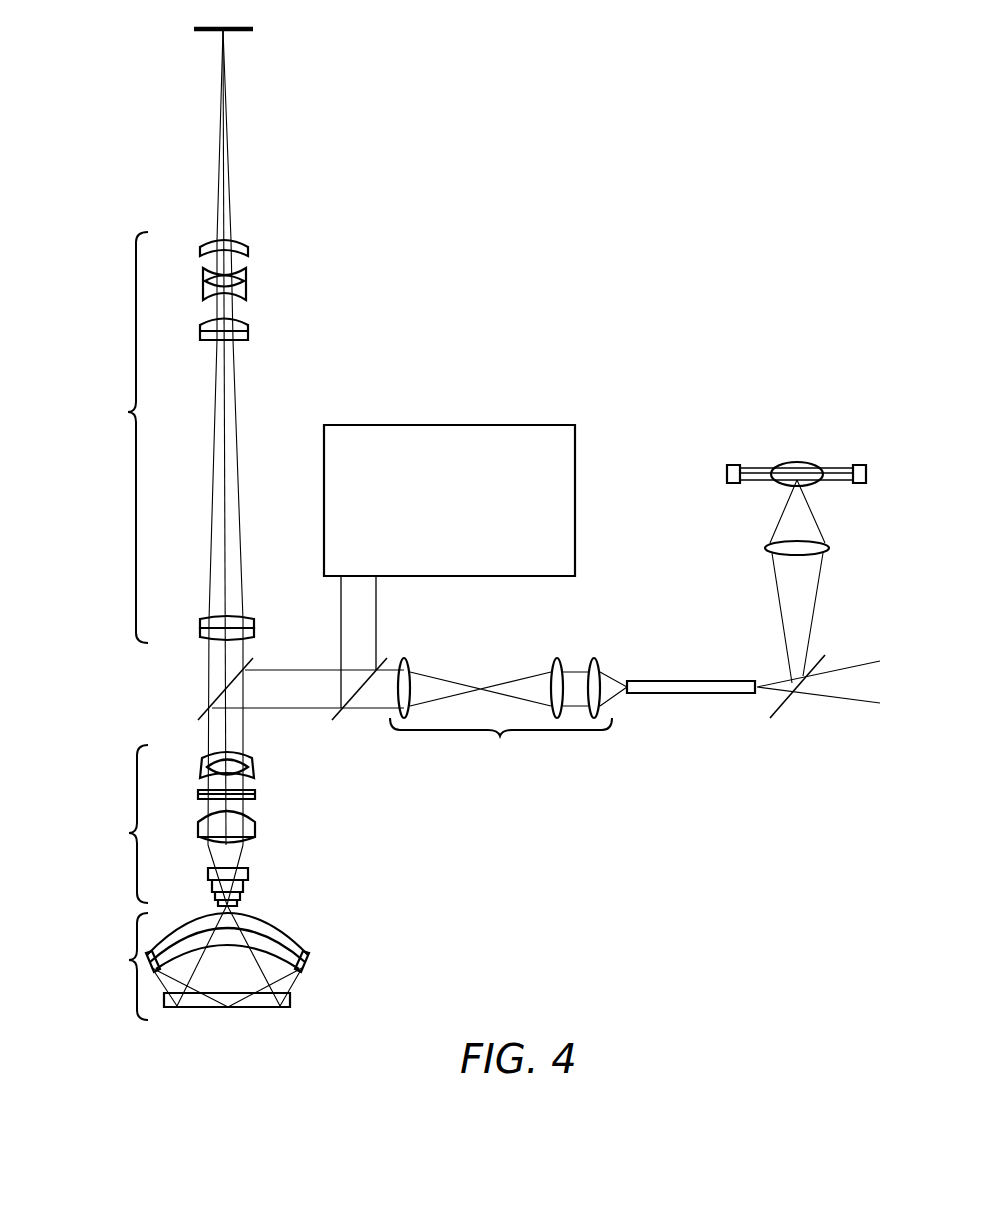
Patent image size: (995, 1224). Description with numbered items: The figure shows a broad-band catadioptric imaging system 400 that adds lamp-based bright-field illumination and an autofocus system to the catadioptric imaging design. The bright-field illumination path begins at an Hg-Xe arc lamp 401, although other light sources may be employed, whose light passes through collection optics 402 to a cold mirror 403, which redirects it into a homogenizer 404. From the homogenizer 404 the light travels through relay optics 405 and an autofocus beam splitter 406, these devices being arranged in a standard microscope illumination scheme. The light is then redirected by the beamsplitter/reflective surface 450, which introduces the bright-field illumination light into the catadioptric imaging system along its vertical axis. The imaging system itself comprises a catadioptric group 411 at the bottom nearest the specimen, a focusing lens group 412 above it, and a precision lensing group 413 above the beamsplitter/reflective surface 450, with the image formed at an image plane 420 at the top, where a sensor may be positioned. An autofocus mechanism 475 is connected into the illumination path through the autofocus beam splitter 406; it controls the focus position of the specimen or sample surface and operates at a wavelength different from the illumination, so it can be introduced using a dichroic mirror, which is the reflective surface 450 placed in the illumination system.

The optical inspection system 400 is at (495, 213).
The image plane 420 is at (258, 30).
The precision lensing group 413 is at (130, 412).
The beamsplitter/reflective surface 450 is at (222, 690).
The focusing lens group 412 is at (131, 833).
The catadioptric group 411 is at (131, 960).
The autofocus mechanism 475 is at (575, 538).
The autofocus beam splitter 406 is at (360, 700).
The relay optics 405 is at (498, 737).
The homogenizer 404 is at (693, 694).
The cold mirror 403 is at (785, 700).
The collection optics 402 is at (825, 552).
The Hg-Xe arc lamp 401 is at (807, 462).